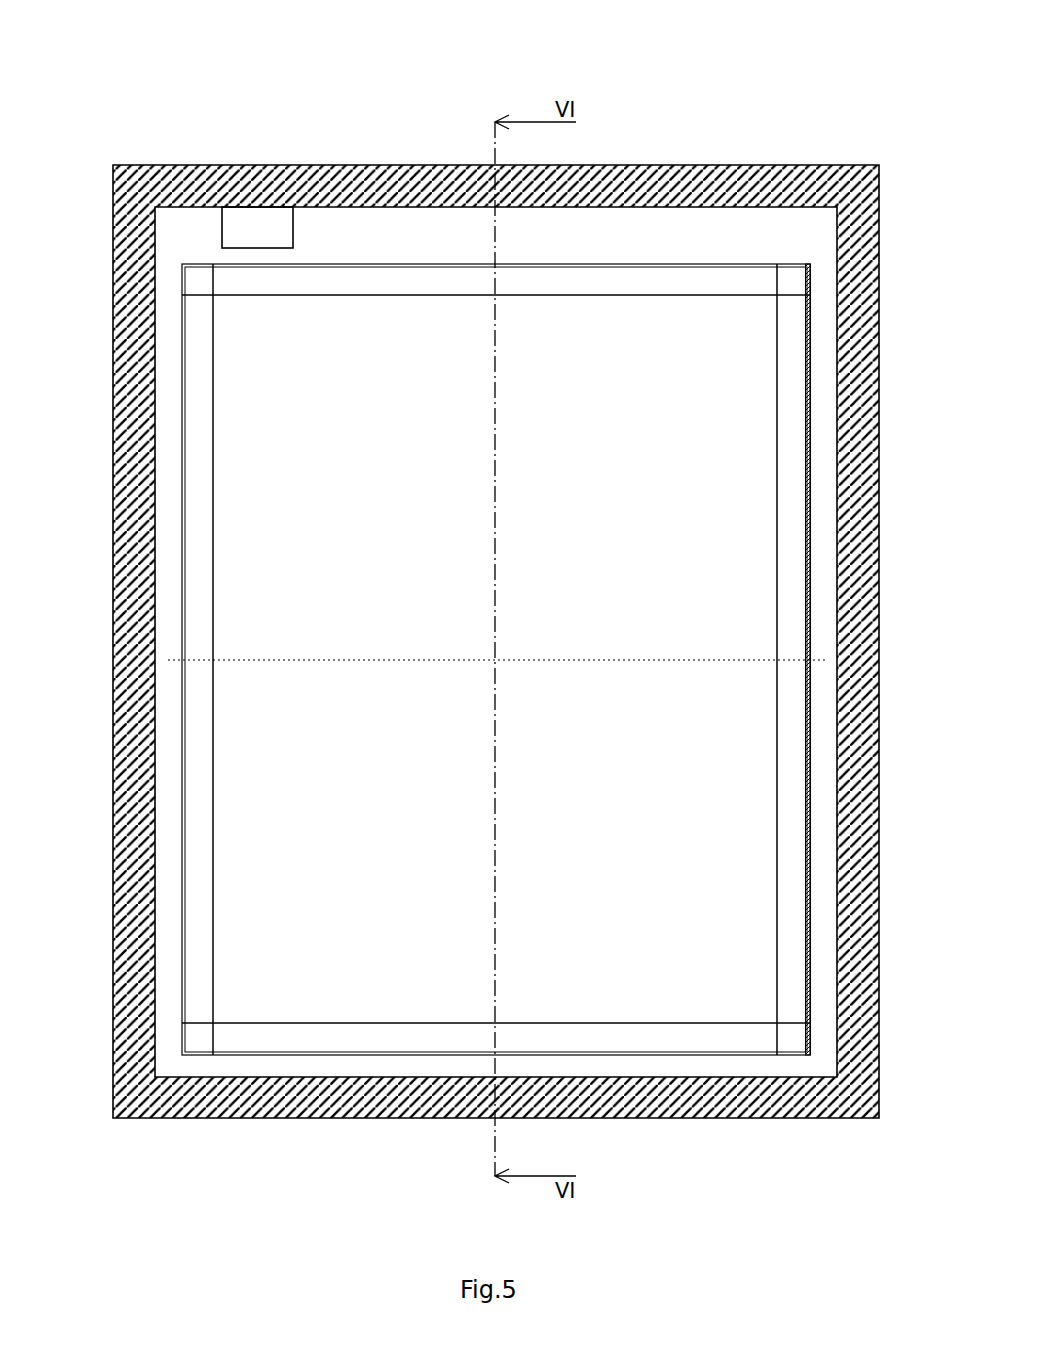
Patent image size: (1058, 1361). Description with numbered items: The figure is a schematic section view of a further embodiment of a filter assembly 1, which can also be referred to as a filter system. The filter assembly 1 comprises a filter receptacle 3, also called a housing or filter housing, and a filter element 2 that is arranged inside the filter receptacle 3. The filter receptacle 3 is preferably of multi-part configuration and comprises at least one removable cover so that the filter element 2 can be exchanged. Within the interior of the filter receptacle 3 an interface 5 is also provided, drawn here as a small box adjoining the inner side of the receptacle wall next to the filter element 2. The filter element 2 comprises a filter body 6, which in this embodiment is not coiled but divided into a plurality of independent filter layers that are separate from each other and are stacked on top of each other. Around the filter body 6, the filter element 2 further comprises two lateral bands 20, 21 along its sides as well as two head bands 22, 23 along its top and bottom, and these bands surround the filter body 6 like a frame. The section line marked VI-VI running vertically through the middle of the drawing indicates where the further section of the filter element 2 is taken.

The filter assembly 1 is at (337, 95).
The filter element 2 is at (503, 632).
The filter receptacle 3 is at (737, 165).
The interface 5 is at (258, 223).
The filter body 6 is at (648, 508).
The lateral band 20 is at (182, 787).
The lateral band 21 is at (810, 605).
The head band 22 is at (620, 263).
The head band 23 is at (723, 1057).